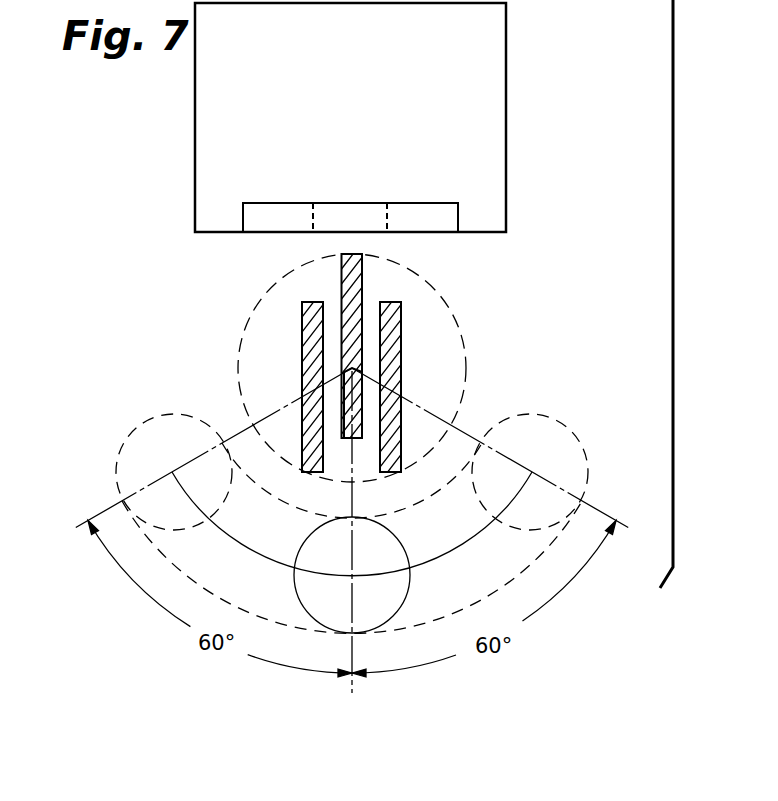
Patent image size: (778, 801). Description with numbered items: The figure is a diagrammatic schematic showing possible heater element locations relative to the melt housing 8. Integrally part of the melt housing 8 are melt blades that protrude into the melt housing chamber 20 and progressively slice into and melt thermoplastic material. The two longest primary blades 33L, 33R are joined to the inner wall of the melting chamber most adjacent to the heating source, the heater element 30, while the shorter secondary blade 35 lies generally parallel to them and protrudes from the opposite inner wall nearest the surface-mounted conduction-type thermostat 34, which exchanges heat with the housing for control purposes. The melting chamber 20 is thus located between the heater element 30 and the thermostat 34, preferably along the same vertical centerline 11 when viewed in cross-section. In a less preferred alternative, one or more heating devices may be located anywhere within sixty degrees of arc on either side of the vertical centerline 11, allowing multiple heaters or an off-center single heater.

The thermostat 34 is at (194, 102).
The melt housing 8 is at (262, 292).
The melt housing chamber 20 is at (287, 368).
The right primary blade 33R is at (301, 327).
The secondary blade 35 is at (363, 278).
The left primary blade 33L is at (402, 328).
The vertical centerline 11 is at (352, 648).
The heater element 30 is at (130, 437).